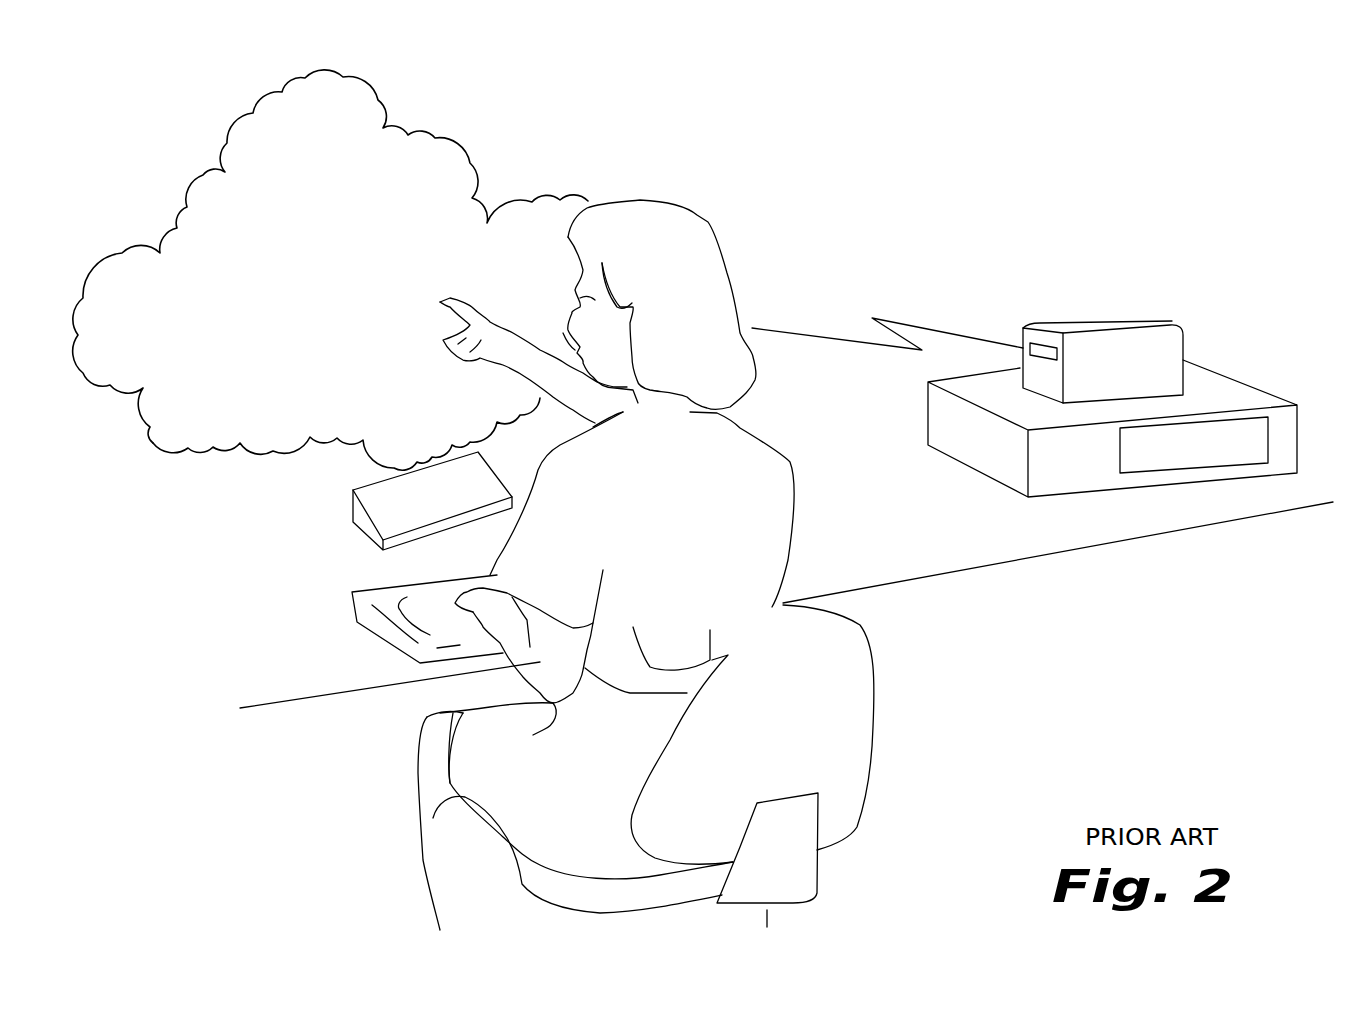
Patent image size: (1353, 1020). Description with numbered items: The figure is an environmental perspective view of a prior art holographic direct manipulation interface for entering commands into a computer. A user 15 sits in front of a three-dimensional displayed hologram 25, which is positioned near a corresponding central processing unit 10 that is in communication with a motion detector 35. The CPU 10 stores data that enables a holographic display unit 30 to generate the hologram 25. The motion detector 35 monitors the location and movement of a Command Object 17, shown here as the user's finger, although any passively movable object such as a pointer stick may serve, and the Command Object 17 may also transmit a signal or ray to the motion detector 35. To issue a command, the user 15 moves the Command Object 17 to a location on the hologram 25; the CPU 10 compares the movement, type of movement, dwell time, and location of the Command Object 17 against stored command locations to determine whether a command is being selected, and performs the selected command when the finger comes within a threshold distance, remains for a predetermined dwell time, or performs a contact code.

The central processing unit 10 is at (1240, 377).
The user 15 is at (615, 521).
The Command Object 17 is at (447, 296).
The hologram 25 is at (223, 140).
The holographic display unit 30 is at (353, 498).
The motion detector 35 is at (1060, 327).